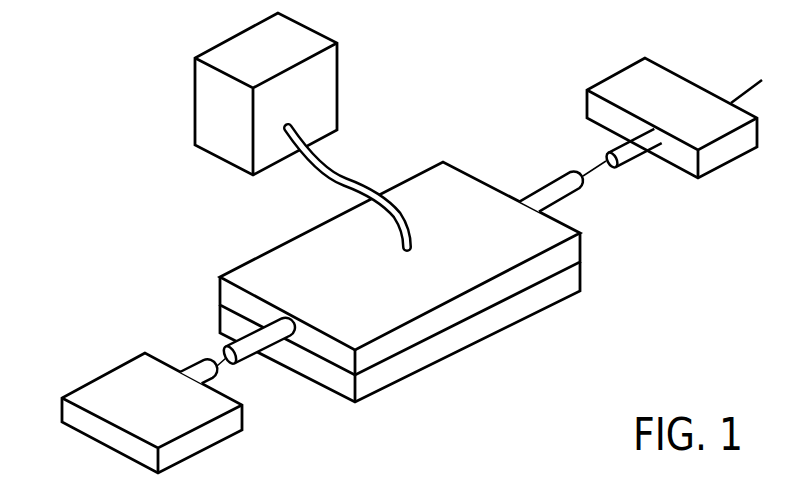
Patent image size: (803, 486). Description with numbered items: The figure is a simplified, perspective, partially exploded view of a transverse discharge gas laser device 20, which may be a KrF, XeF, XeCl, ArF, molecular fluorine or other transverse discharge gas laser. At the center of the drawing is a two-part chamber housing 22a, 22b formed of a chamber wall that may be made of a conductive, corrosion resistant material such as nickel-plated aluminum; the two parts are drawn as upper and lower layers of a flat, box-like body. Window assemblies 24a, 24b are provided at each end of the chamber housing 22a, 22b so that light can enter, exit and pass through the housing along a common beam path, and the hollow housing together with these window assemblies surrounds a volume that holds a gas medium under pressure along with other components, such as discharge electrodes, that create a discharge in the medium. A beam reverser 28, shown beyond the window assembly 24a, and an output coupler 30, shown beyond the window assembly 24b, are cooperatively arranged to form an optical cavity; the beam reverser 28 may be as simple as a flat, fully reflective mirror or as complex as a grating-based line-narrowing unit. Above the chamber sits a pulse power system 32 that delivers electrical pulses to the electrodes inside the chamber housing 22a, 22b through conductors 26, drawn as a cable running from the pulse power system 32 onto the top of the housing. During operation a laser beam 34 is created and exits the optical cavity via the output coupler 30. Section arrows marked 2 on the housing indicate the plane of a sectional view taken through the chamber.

The transverse discharge gas laser device 20 is at (104, 192).
The chamber housing 22a is at (255, 277).
The chamber housing 22b is at (578, 292).
The window assembly 24a is at (253, 362).
The window assembly 24b is at (568, 184).
The conductors 26 is at (343, 178).
The beam reverser 28 is at (133, 387).
The output coupler 30 is at (628, 85).
The pulse power system 32 is at (218, 110).
The laser beam 34 is at (747, 90).
The section line 2- 2 is at (289, 191).